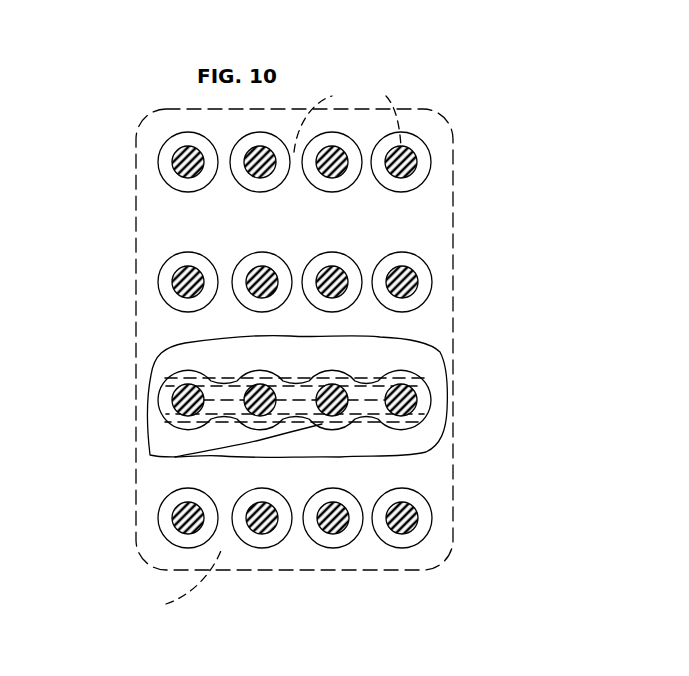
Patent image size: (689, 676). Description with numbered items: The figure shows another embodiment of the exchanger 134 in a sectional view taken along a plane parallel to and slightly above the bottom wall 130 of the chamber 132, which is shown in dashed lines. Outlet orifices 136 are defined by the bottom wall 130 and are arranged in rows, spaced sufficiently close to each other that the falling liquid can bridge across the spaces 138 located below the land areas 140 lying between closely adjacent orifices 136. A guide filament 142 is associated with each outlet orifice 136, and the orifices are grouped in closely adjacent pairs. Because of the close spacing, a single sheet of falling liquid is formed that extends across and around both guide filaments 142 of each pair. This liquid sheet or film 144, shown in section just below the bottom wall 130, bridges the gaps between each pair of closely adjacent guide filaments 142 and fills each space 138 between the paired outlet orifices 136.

The bottom wall 130 is at (315, 223).
The chamber 132 is at (135, 311).
The exchanger 134 is at (508, 250).
The outlet orifices 136 is at (421, 152).
The spaces 138 is at (493, 353).
The land areas 140 is at (225, 270).
The guide filaments 142 is at (258, 148).
The liquid sheet or film 144 is at (430, 447).